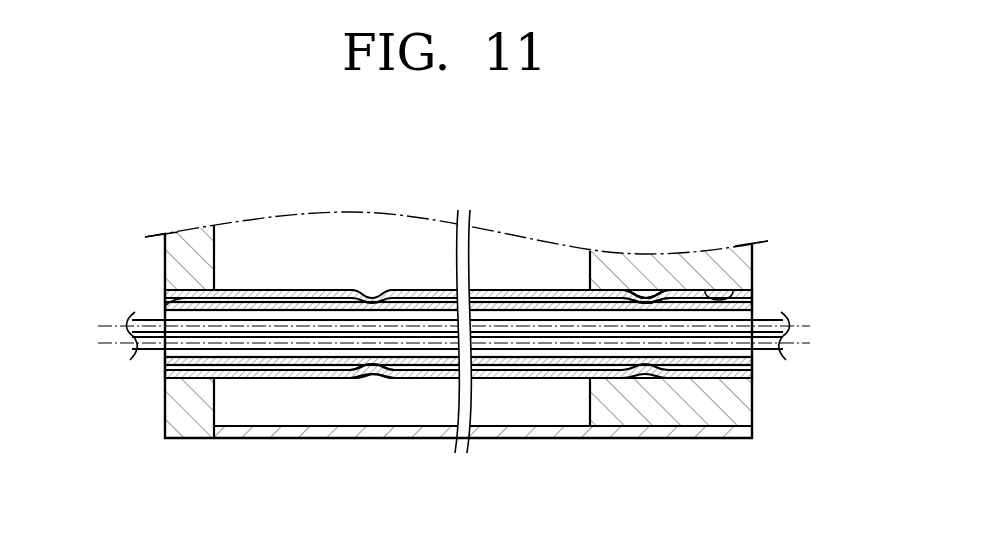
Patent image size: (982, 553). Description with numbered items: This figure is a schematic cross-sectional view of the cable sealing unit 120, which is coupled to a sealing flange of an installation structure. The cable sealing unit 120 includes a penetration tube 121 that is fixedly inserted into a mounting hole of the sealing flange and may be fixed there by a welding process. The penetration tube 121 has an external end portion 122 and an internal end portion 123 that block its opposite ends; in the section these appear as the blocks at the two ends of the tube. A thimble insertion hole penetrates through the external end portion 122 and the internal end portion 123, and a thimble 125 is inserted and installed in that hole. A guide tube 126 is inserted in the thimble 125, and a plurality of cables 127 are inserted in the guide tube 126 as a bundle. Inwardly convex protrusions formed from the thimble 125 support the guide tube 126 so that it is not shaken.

The cable sealing unit 120 is at (758, 446).
The penetration tube 121 is at (532, 440).
The external end portion 122 is at (735, 405).
The internal end portion 123 is at (174, 410).
The thimble 125 is at (300, 290).
The guide tube 126 is at (522, 305).
The cables 127 is at (253, 330).